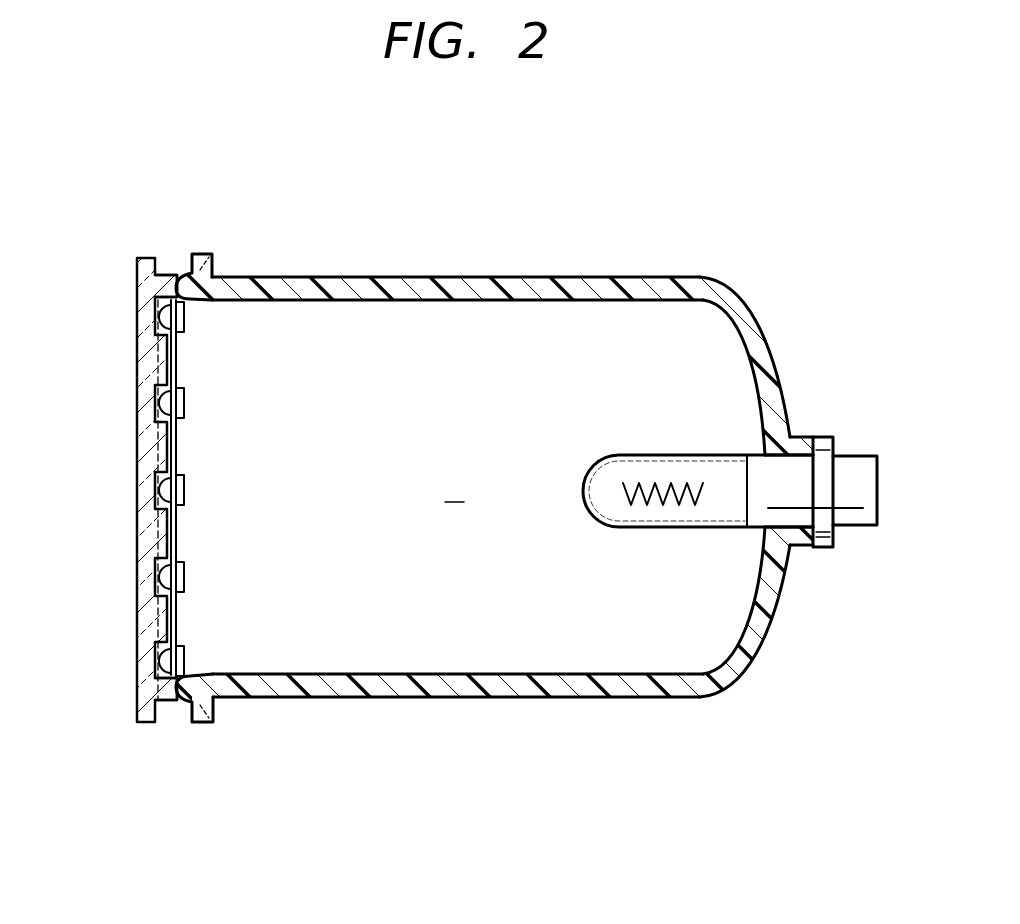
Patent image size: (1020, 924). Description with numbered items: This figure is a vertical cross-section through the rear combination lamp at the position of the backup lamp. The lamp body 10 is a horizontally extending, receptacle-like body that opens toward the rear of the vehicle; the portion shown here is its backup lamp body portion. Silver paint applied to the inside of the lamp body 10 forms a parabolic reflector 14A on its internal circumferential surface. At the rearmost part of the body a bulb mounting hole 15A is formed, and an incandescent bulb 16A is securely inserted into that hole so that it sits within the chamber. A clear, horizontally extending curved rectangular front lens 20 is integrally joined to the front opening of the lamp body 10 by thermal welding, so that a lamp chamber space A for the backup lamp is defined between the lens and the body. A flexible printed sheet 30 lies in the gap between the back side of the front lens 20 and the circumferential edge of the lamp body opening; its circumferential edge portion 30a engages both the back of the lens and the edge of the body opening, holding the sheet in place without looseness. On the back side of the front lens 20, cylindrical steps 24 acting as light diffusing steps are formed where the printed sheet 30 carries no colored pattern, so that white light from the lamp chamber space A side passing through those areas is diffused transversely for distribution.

The lamp body 10 is at (510, 470).
The parabolic reflector 14A is at (748, 352).
The bulb mounting hole 15A is at (787, 521).
The incandescent bulb 16A is at (677, 528).
The front lens 20 is at (317, 497).
The cylindrical steps 24 is at (172, 357).
The flexible printed sheet 30 is at (317, 497).
The circumferential edge portion 30a is at (171, 292).
The lamp chamber space A is at (454, 489).